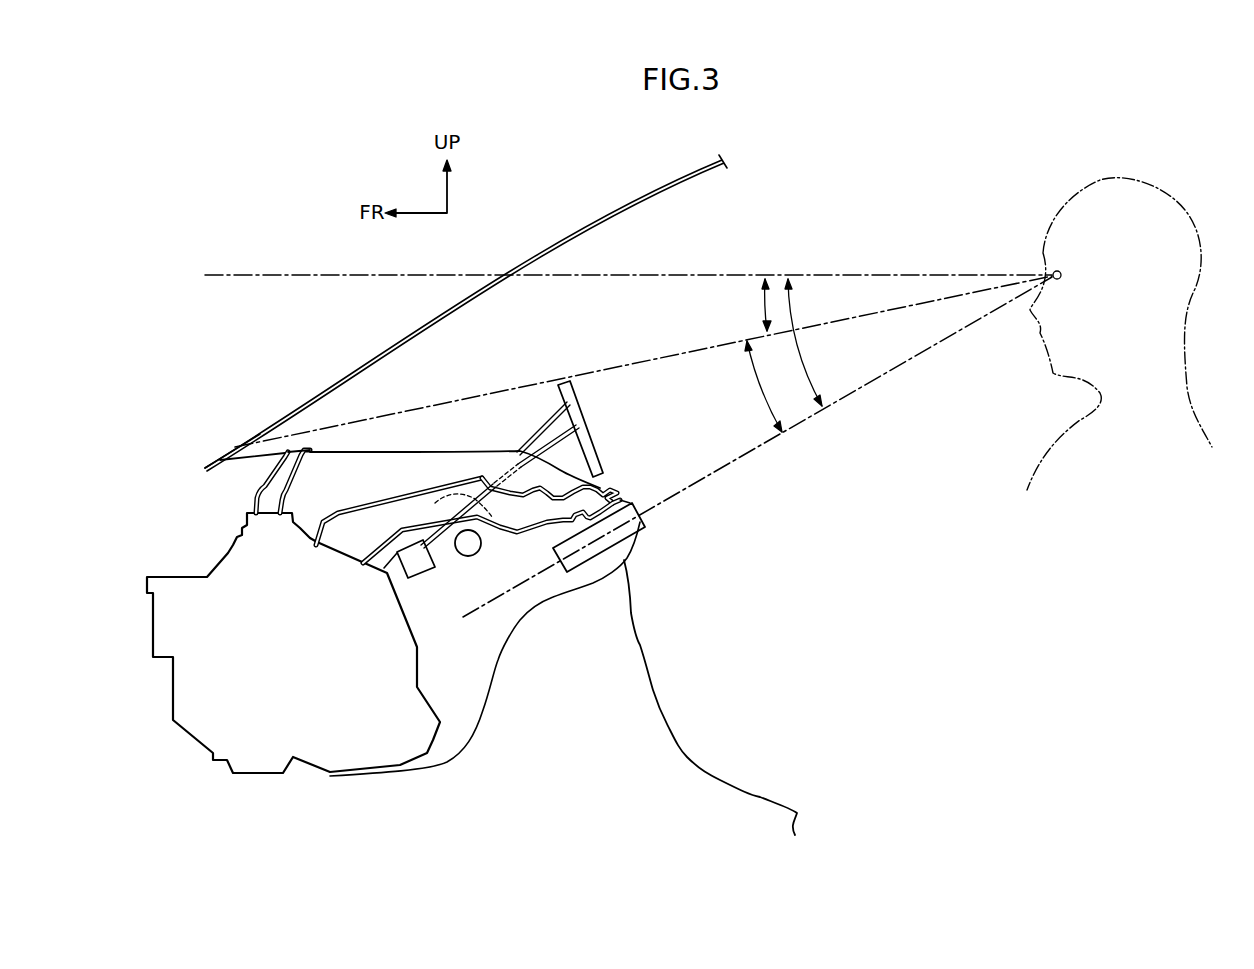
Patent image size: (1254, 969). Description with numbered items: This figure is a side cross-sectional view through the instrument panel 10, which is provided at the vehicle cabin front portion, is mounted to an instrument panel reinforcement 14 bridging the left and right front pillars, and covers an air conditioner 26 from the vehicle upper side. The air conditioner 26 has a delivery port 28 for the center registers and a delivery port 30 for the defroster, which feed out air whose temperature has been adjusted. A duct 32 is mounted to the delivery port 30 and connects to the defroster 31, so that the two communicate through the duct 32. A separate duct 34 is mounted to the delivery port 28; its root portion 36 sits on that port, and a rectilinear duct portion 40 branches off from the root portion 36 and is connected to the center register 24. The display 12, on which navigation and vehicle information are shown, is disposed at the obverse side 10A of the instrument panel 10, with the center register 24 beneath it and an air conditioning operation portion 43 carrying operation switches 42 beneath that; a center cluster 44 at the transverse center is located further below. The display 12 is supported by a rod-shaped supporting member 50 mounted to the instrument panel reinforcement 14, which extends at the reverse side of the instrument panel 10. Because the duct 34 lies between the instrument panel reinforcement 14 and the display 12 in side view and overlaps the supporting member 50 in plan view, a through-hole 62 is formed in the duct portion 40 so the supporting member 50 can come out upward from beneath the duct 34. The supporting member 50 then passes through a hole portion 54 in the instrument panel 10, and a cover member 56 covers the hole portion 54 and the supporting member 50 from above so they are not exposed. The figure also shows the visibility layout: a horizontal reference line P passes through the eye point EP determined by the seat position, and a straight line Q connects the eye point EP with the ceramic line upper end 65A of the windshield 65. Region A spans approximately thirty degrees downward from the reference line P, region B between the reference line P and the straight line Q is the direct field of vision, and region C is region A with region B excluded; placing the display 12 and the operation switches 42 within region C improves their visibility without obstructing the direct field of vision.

The instrument panel 10 is at (422, 448).
The obverse side of instrument panel 10A is at (378, 455).
The display 12 is at (580, 425).
The instrument panel reinforcement 14 is at (425, 565).
The center register 24 is at (615, 490).
The air conditioner 26 is at (362, 748).
The delivery port for the center registers 28 is at (343, 543).
The delivery port for the defroster 30 is at (273, 507).
The defroster 31 is at (302, 447).
The duct 32 is at (258, 487).
The duct 34 is at (493, 532).
The root portion 36 is at (338, 513).
The duct portion 40 is at (537, 525).
The operation switches 42 is at (630, 503).
The air conditioning operation portion 43 is at (647, 523).
The center cluster 44 is at (636, 622).
The supporting member 50 is at (438, 537).
The hole portion 54 is at (530, 467).
The cover member 56 is at (532, 430).
The through-hole 62 is at (435, 503).
The windshield 65 is at (335, 380).
The ceramic line upper end 65A is at (242, 442).
The reference line P is at (863, 274).
The straight line Q is at (917, 303).
The eye point EP is at (1062, 276).
The region A is at (800, 348).
The region B is at (763, 310).
The region C is at (758, 390).